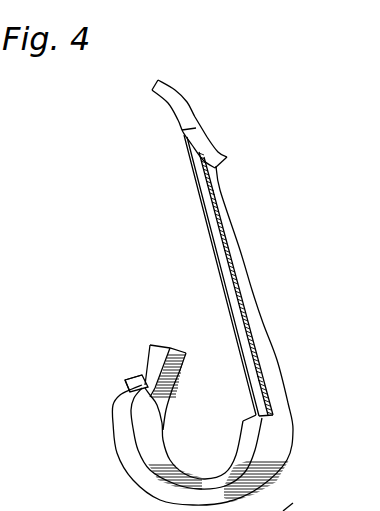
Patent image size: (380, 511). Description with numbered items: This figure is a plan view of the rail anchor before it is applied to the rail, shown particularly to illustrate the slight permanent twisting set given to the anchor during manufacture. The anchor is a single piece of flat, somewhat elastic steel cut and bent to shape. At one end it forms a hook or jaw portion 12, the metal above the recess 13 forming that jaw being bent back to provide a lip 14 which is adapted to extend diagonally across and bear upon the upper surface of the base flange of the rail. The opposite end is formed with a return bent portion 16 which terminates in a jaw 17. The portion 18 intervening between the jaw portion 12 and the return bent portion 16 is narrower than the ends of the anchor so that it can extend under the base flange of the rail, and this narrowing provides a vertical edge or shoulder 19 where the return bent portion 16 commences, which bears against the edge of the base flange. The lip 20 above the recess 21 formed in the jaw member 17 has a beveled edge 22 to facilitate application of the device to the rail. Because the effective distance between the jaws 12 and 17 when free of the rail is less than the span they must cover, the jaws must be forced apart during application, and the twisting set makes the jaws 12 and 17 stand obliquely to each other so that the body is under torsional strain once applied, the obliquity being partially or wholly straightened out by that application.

The hook or jaw portion 12 is at (195, 103).
The recess 13 is at (187, 138).
The lip 14 is at (222, 149).
The return bent portion 16 is at (214, 484).
The jaw 17 is at (150, 345).
The intervening portion 18 is at (245, 307).
The vertical edge or shoulder 19 is at (268, 415).
The lip 20 is at (130, 395).
The recess 21 is at (142, 376).
The beveled edge 22 is at (125, 386).